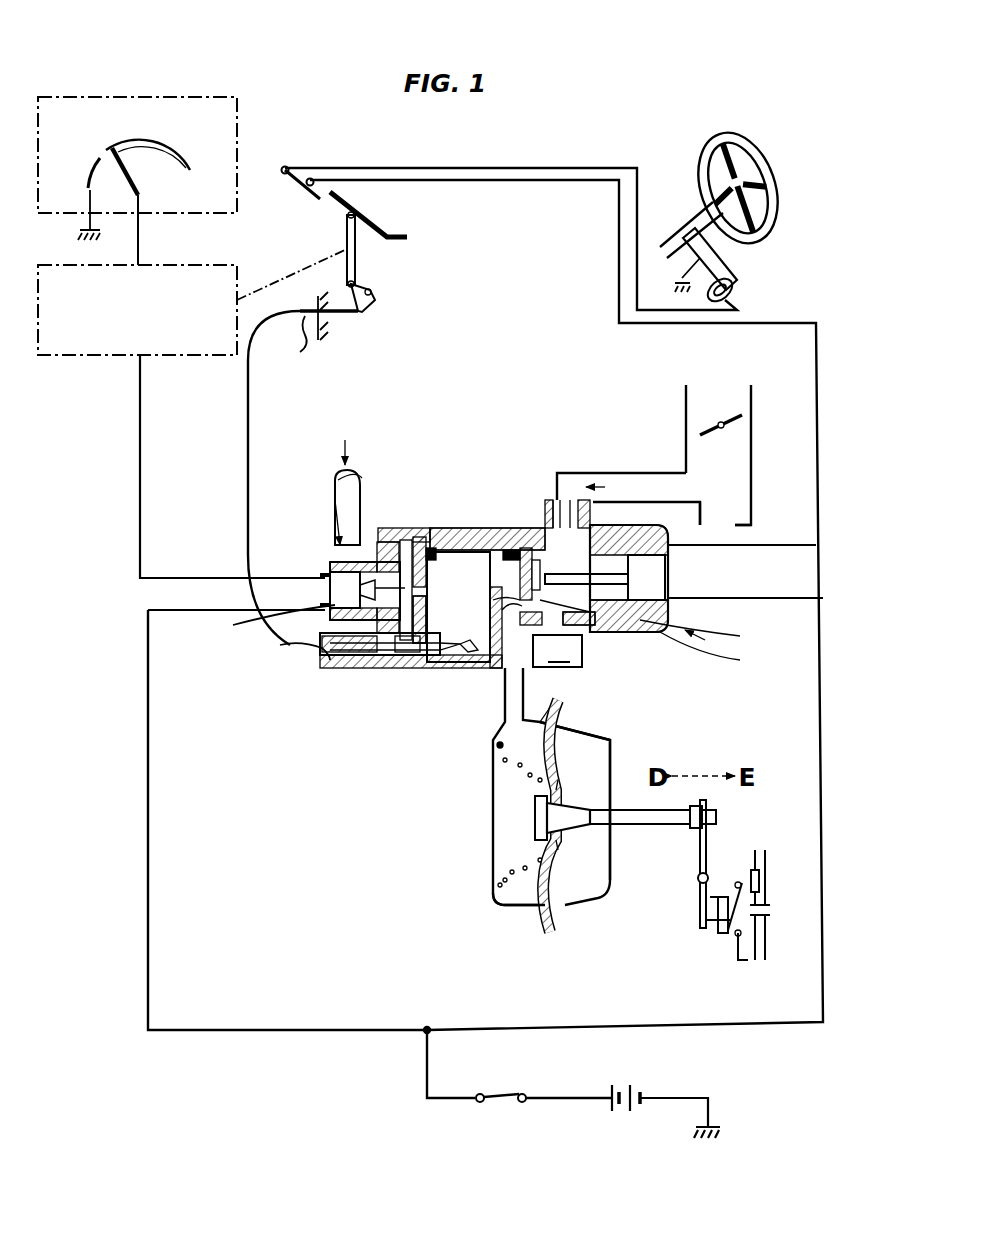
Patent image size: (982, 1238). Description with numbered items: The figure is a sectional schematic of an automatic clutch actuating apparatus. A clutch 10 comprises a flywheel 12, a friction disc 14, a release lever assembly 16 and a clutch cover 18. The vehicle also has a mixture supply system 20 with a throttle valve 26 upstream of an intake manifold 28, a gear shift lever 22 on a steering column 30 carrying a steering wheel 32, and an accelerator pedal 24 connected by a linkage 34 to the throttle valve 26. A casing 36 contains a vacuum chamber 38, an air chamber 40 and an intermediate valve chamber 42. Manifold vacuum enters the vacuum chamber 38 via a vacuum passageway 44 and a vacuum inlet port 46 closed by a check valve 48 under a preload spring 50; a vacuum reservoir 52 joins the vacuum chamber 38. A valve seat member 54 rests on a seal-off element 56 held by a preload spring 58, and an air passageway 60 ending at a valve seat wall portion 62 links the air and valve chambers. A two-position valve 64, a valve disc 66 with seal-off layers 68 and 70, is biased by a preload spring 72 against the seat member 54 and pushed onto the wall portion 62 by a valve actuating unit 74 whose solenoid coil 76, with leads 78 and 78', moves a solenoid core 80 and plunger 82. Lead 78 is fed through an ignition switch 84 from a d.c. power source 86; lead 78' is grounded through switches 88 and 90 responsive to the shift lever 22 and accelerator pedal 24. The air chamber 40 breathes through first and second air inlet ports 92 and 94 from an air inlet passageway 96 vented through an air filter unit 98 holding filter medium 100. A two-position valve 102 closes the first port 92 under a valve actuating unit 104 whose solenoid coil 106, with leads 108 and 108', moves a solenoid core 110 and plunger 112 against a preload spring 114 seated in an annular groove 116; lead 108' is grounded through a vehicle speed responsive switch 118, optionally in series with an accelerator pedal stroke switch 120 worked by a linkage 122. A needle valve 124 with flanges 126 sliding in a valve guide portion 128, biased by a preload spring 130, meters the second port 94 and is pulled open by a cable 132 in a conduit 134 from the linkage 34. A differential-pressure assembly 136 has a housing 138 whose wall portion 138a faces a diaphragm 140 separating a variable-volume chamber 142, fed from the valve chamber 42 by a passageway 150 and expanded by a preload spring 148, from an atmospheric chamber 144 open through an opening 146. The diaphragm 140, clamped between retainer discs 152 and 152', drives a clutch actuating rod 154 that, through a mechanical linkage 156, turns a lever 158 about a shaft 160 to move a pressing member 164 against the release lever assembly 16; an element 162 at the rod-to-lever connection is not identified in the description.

The clutch 10 is at (772, 842).
The flywheel 12 is at (758, 850).
The friction disc 14 is at (760, 880).
The release lever assembly 16 is at (735, 940).
The clutch cover 18 is at (748, 960).
The air-fuel mixture supply system 20 is at (672, 395).
The transmission gear shift lever 22 is at (720, 262).
The accelerator pedal 24 is at (378, 222).
The throttle valve 26 is at (722, 416).
The intake manifold 28 is at (738, 490).
The steering column 30 is at (672, 228).
The steering wheel 32 is at (705, 155).
The mechanical linkage 34 is at (358, 254).
The casing 36 is at (545, 578).
The vacuum chamber 38 is at (610, 625).
The air chamber 40 is at (448, 505).
The valve chamber 42 is at (530, 690).
The vacuum passageway 44 is at (652, 470).
The vacuum inlet port 46 is at (612, 518).
The one-way check valve 48 is at (584, 500).
The preload spring 50 is at (570, 500).
The vacuum reservoir 52 is at (557, 651).
The annular valve seat member 54 is at (560, 500).
The resilient seal-off element 56 is at (553, 500).
The preload spring 58 is at (560, 615).
The air passageway 60 is at (508, 620).
The valve seat wall portion 62 is at (500, 610).
The two-position valve 64 is at (540, 545).
The rigid valve disc 66 is at (528, 548).
The seal-off layer 68 is at (575, 627).
The seal-off layer 70 is at (532, 570).
The preload spring 72 is at (512, 680).
The solenoid operated valve actuating unit 74 is at (717, 654).
The solenoid coil 76 is at (708, 635).
The input terminal lead 78 is at (706, 578).
The output terminal lead 78' is at (742, 561).
The solenoid core 80 is at (665, 578).
The plunger 82 is at (704, 649).
The switch 84 is at (504, 1094).
The d.c. power source 86 is at (630, 1082).
The gear shift lever responsive switch 88 is at (735, 292).
The accelerator pedal responsive switch 90 is at (300, 188).
The first restricted-flow air inlet port 92 is at (430, 598).
The second restricted-flow air inlet port 94 is at (440, 670).
The common air inlet passageway 96 is at (430, 548).
The air filter unit 98 is at (352, 480).
The filter medium 100 is at (340, 500).
The two-position valve 102 is at (406, 540).
The solenoid-operated valve actuating unit 104 is at (335, 520).
The solenoid coil 106 is at (330, 565).
The input terminal lead 108 is at (266, 658).
The output terminal lead 108' is at (327, 590).
The solenoid core 110 is at (240, 628).
The plunger 112 is at (402, 545).
The preload spring 114 is at (438, 528).
The annular groove 116 is at (430, 623).
The vehicle speed responsive switch 118 is at (237, 140).
The accelerator pedal stroke switch 120 is at (165, 357).
The mechanical linkage 122 is at (308, 268).
The needle valve 124 is at (410, 670).
The flanges 126 is at (405, 670).
The valve guide portion 128 is at (325, 670).
The preload spring 130 is at (340, 670).
The cable 132 is at (250, 395).
The conduit 134 is at (300, 352).
The differential-pressure assembly 136 is at (485, 810).
The hollow housing 138 is at (618, 732).
The wall portion 138a is at (493, 840).
The flexible diaphragm 140 is at (540, 912).
The variable-volume chamber 142 is at (500, 790).
The atmospheric chamber 144 is at (556, 768).
The opening 146 is at (615, 826).
The preload spring 148 is at (510, 875).
The passageway 150 is at (560, 704).
The retainer disc 152 is at (478, 861).
The retainer disc 152' is at (593, 862).
The clutch actuating rod 154 is at (633, 800).
The mechanical linkage 156 is at (690, 906).
The lever 158 is at (690, 857).
The shaft 160 is at (700, 880).
The rod end 162 is at (715, 822).
The pressing member 164 is at (712, 933).